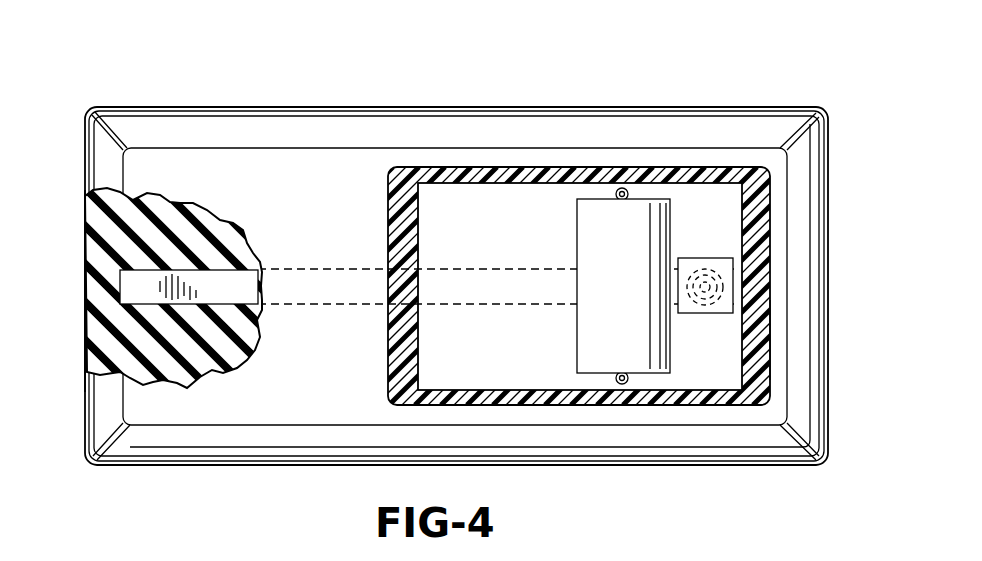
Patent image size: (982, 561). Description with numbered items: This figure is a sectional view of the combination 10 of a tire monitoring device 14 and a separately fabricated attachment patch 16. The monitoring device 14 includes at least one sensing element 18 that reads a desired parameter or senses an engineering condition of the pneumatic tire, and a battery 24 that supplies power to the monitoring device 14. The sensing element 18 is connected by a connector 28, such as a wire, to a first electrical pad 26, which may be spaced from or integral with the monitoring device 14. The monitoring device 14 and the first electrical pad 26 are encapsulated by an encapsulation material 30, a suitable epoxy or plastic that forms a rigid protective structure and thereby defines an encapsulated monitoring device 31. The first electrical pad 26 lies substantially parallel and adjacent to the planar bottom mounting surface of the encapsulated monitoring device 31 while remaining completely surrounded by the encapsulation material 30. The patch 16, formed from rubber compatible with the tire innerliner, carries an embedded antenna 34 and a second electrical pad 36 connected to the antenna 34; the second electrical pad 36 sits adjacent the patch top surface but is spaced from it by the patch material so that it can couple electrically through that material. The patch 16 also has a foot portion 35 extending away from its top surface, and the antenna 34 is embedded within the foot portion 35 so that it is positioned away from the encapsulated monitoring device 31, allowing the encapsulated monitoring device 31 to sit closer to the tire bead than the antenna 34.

The combination 10 is at (274, 63).
The monitoring device 14 is at (742, 224).
The attachment patch 16 is at (213, 472).
The sensing element 18 is at (735, 270).
The battery 24 is at (643, 349).
The first electrical pad 26 is at (762, 340).
The connector 28 is at (706, 300).
The encapsulation material 30 is at (698, 402).
The encapsulated monitoring device 31 is at (623, 414).
The antenna 34 is at (143, 293).
The foot portion 35 is at (404, 107).
The second electrical pad 36 is at (735, 297).